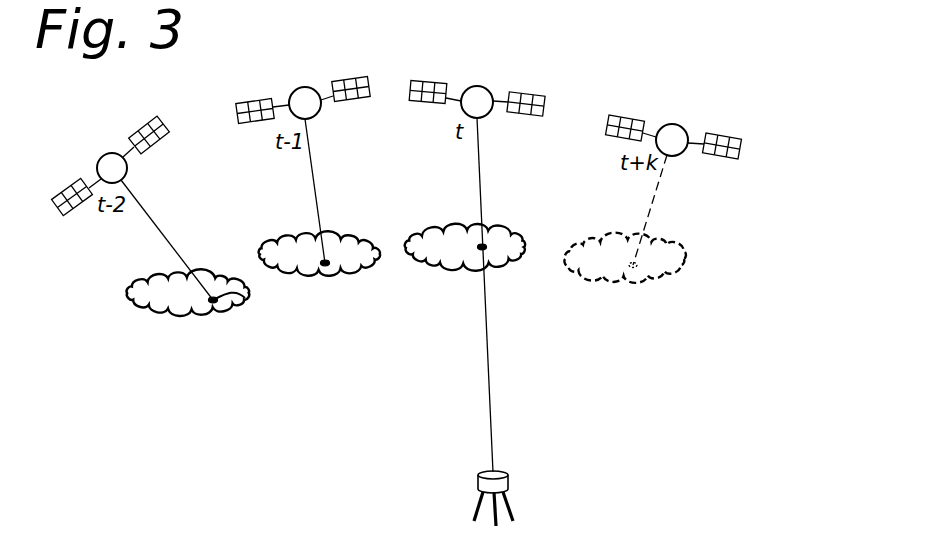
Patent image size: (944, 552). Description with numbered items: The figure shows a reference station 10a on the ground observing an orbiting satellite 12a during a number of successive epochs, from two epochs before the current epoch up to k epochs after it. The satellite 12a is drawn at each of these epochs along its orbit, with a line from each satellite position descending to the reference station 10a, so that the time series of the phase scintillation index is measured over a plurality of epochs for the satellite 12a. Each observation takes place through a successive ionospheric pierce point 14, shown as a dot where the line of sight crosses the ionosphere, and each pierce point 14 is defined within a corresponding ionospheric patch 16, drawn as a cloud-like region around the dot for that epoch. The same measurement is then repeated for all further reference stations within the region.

The orbiting satellite 12a is at (127, 167).
The ionospheric pierce point (IPP) 14 is at (246, 304).
The ionospheric patch 16 is at (168, 308).
The reference station 10a is at (506, 484).